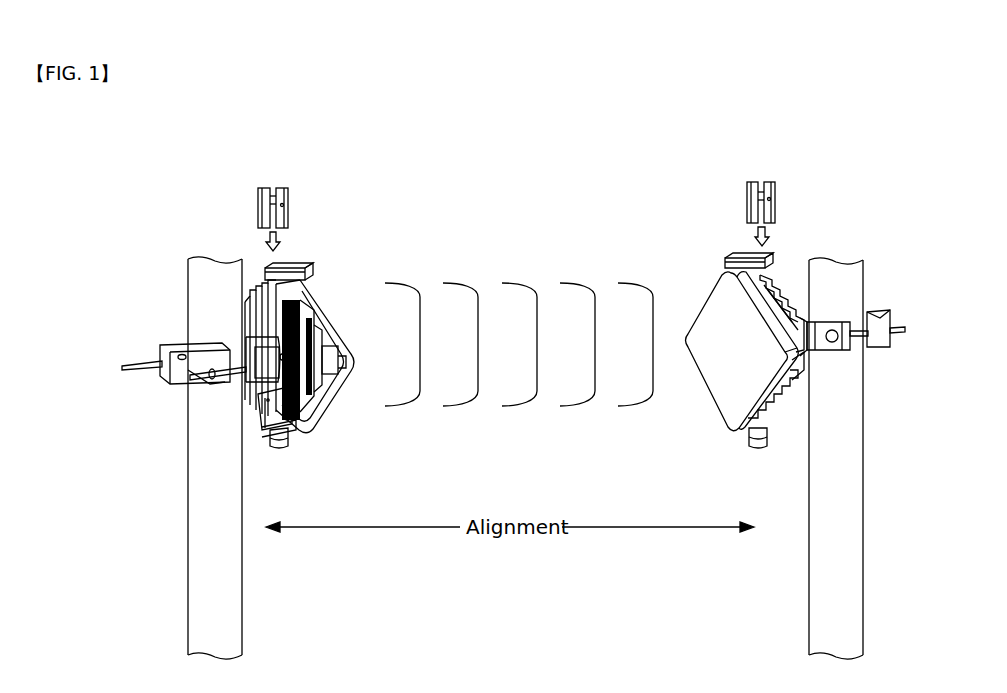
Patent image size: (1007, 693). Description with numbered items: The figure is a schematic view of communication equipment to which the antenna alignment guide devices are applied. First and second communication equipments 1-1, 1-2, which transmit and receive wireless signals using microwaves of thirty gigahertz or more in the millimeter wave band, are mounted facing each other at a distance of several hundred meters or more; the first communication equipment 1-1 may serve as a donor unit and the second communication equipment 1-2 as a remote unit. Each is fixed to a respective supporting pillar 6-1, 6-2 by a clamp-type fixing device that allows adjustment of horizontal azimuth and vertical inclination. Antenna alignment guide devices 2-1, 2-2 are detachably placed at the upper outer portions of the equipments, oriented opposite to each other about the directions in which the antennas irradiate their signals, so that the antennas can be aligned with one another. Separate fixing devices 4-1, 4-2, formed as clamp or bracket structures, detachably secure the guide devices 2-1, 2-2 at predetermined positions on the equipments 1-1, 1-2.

The first communication equipment 1-1 is at (326, 297).
The second communication equipment 1-2 is at (705, 298).
The antenna alignment guide device 2-1 is at (298, 266).
The antenna alignment guide device 2-2 is at (741, 260).
The fixing device 4-1 is at (258, 204).
The fixing device 4-2 is at (776, 200).
The supporting pillar 6-1 is at (188, 486).
The supporting pillar 6-2 is at (863, 488).